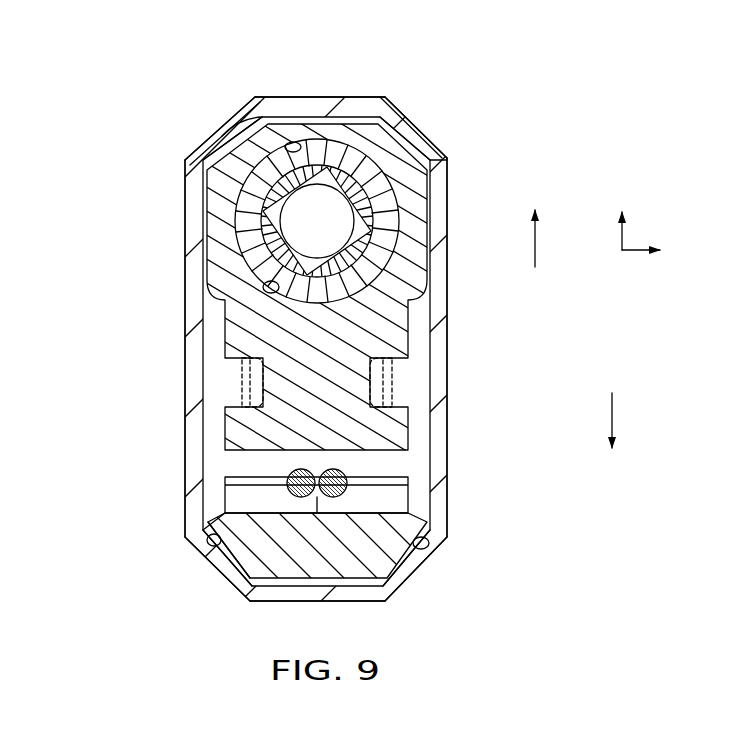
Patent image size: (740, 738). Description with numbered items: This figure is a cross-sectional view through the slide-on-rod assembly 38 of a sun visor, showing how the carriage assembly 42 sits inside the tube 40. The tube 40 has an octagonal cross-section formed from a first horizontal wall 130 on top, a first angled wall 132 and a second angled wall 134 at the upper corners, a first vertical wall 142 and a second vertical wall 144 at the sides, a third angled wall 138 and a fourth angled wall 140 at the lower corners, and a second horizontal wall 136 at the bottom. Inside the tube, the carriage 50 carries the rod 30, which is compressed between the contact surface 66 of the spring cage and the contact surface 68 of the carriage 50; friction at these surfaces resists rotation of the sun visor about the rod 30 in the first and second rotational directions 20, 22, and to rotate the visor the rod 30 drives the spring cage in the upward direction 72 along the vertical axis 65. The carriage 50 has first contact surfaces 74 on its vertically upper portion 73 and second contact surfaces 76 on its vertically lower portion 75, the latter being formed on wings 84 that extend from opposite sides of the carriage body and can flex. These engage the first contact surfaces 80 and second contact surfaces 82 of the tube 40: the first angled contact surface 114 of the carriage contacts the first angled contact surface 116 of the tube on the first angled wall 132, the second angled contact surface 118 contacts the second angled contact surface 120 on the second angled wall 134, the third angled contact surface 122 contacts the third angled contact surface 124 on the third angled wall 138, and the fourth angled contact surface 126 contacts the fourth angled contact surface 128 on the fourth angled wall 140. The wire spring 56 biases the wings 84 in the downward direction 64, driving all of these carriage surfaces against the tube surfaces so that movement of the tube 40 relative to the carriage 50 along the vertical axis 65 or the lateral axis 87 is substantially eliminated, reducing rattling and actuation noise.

The first rotational direction 20 is at (470, 60).
The second rotational direction 22 is at (164, 58).
The rod 30 is at (347, 187).
The slide-on-rod assembly 38 is at (180, 131).
The tube 40 is at (190, 222).
The carriage assembly 42 is at (470, 324).
The carriage 50 is at (243, 318).
The wire spring 56 is at (342, 488).
The downward direction 64 is at (612, 415).
The vertical axis 65 is at (622, 232).
The contact surface 66 is at (293, 141).
The contact surface 68 is at (262, 283).
The upward direction 72 is at (533, 243).
The vertically upper portion 73 is at (448, 108).
The first contact surfaces 74 is at (245, 140).
The vertically lower portion 75 is at (440, 598).
The second contact surfaces 76 is at (220, 550).
The first contact surfaces 80 is at (377, 105).
The second contact surfaces 82 is at (207, 532).
The wings 84 is at (307, 560).
The lateral axis 87 is at (635, 252).
The first angled contact surface 114 is at (231, 113).
The first angled contact surface 116 is at (287, 148).
The second angled contact surface 118 is at (423, 145).
The second angled contact surface 120 is at (465, 160).
The third angled contact surface 122 is at (222, 575).
The third angled contact surface 124 is at (168, 530).
The fourth angled contact surface 126 is at (432, 560).
The fourth angled contact surface 128 is at (430, 538).
The first horizontal wall 130 is at (320, 96).
The first angled wall 132 is at (233, 112).
The second angled wall 134 is at (440, 143).
The second horizontal wall 136 is at (273, 605).
The third angled wall 138 is at (238, 593).
The fourth angled wall 140 is at (398, 585).
The first vertical wall 142 is at (192, 257).
The second vertical wall 144 is at (449, 285).